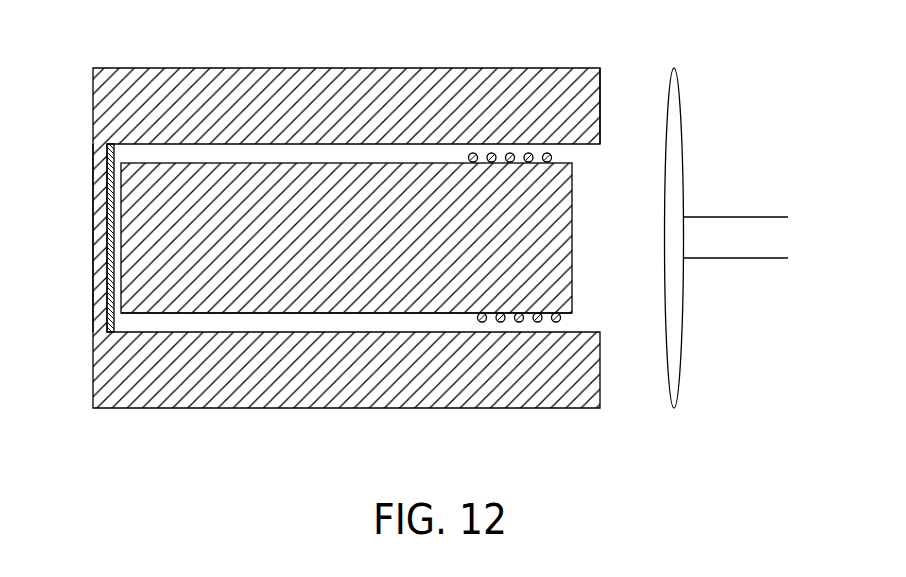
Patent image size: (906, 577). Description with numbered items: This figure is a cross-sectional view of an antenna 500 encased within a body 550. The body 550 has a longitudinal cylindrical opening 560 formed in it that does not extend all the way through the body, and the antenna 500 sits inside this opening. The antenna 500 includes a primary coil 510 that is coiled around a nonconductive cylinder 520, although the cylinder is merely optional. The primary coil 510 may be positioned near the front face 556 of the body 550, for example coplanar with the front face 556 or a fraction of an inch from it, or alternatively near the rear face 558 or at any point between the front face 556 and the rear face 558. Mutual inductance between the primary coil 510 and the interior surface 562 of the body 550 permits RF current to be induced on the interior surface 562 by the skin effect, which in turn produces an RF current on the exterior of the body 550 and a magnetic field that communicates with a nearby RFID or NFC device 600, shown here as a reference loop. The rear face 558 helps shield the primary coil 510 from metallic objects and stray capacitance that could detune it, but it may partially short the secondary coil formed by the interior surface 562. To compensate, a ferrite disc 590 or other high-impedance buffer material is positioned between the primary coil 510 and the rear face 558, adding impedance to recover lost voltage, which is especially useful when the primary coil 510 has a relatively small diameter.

The antenna 500 is at (386, 222).
The primary coil 510 is at (550, 157).
The nonconductive cylinder 520 is at (572, 259).
The body 550 is at (346, 219).
The front face 556 is at (600, 72).
The rear face 558 is at (95, 230).
The longitudinal cylindrical opening 560 is at (584, 325).
The interior surface 562 is at (333, 331).
The ferrite disc 590 is at (115, 150).
The device 600 is at (683, 160).